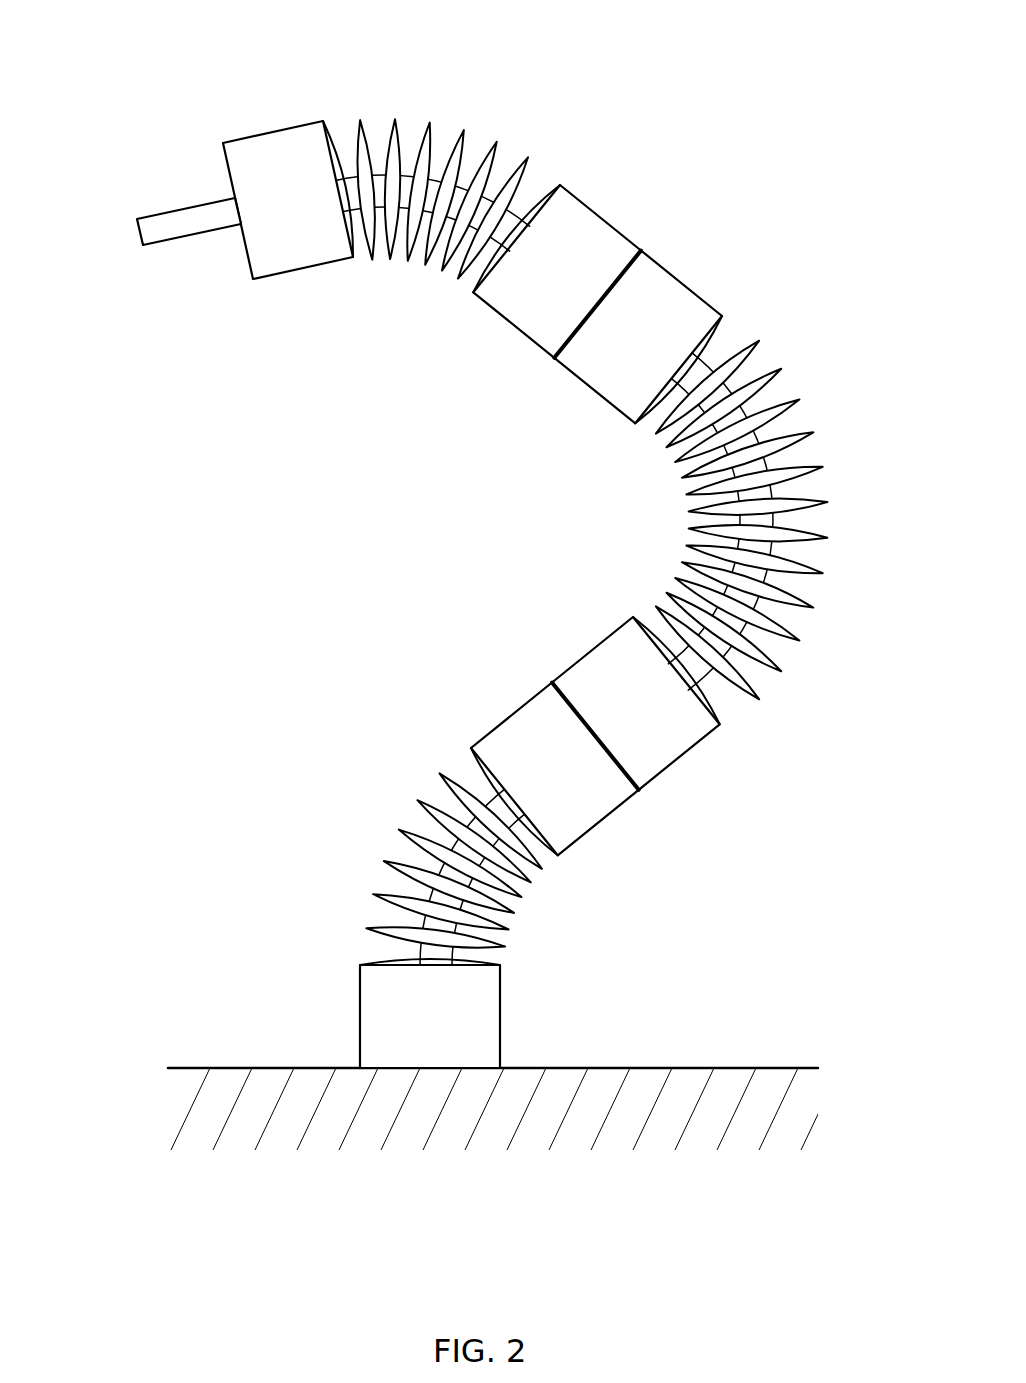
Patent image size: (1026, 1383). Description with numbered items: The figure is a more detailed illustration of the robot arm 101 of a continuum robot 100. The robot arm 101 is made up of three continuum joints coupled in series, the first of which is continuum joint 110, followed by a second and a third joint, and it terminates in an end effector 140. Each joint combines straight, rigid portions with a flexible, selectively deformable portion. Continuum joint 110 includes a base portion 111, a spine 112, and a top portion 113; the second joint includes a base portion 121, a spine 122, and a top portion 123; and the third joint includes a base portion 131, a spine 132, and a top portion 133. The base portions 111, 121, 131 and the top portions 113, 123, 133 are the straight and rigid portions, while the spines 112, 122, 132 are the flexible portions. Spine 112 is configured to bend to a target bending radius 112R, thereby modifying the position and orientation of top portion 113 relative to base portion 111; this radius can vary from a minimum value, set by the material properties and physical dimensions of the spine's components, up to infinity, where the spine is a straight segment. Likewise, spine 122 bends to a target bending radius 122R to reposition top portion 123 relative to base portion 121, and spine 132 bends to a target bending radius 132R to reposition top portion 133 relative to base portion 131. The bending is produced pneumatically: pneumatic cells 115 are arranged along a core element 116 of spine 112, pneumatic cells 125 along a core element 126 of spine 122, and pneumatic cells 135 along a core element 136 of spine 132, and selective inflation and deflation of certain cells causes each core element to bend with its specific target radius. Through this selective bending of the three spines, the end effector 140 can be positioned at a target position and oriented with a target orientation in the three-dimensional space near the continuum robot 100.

The continuum robot 100 is at (100, 62).
The robot arm 101 is at (800, 913).
The continuum joint 110 is at (429, 876).
The base portion 111 is at (502, 1050).
The spine 112 is at (444, 761).
The target bending radius 112R is at (618, 912).
The top portion 113 is at (603, 823).
The pneumatic cells 115 is at (387, 937).
The core element 116 is at (410, 948).
The base portion 121 is at (688, 758).
The spine 122 is at (838, 335).
The target bending radius 122R is at (557, 524).
The top portion 123 is at (677, 273).
The pneumatic cells 125 is at (758, 672).
The core element 126 is at (708, 675).
The base portion 131 is at (585, 198).
The spine 132 is at (544, 140).
The target bending radius 132R is at (356, 331).
The top portion 133 is at (272, 128).
The pneumatic cells 135 is at (533, 165).
The core element 136 is at (515, 212).
The end effector 140 is at (193, 243).